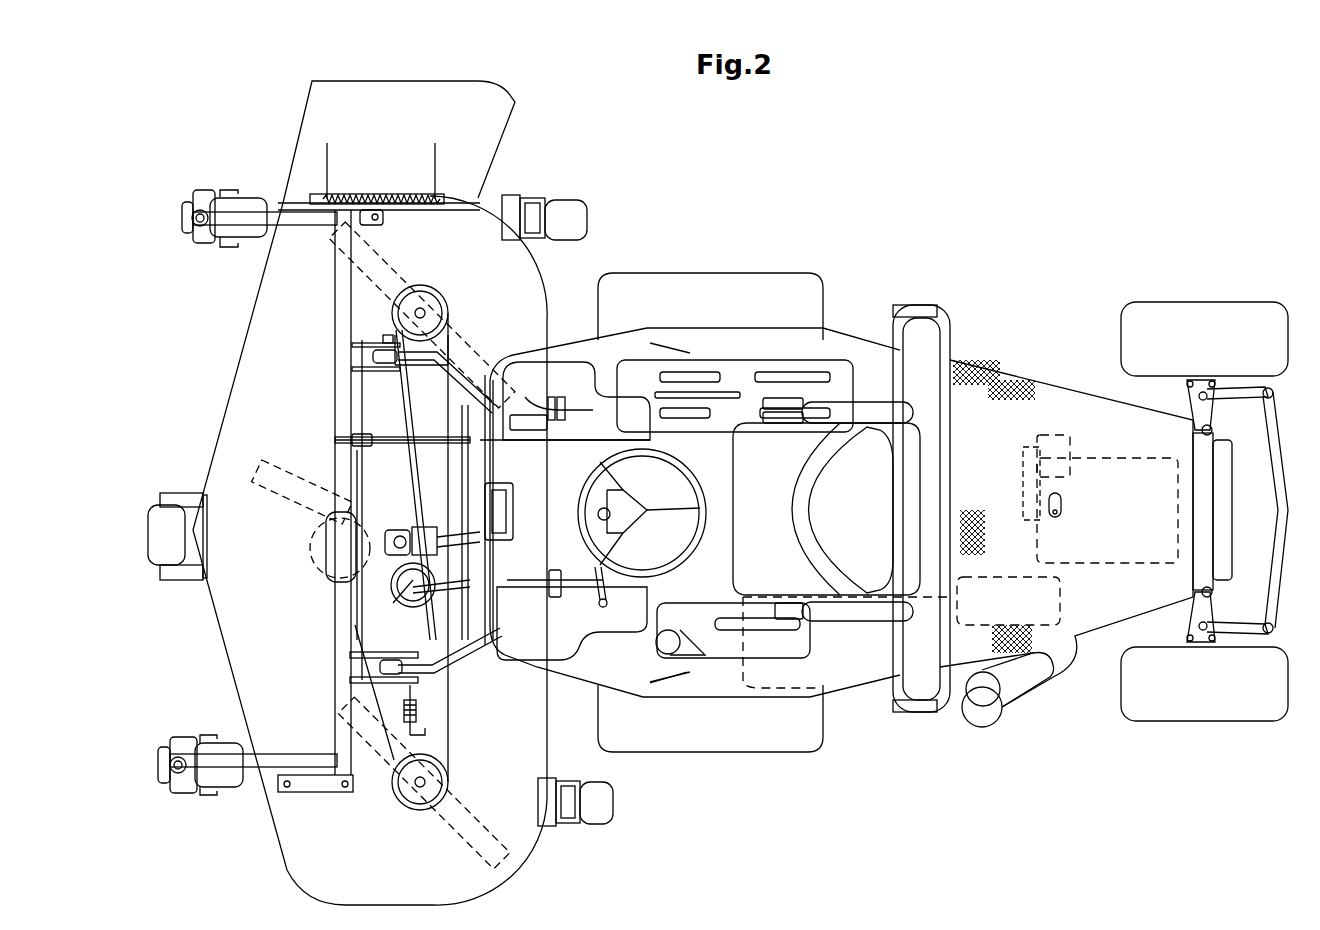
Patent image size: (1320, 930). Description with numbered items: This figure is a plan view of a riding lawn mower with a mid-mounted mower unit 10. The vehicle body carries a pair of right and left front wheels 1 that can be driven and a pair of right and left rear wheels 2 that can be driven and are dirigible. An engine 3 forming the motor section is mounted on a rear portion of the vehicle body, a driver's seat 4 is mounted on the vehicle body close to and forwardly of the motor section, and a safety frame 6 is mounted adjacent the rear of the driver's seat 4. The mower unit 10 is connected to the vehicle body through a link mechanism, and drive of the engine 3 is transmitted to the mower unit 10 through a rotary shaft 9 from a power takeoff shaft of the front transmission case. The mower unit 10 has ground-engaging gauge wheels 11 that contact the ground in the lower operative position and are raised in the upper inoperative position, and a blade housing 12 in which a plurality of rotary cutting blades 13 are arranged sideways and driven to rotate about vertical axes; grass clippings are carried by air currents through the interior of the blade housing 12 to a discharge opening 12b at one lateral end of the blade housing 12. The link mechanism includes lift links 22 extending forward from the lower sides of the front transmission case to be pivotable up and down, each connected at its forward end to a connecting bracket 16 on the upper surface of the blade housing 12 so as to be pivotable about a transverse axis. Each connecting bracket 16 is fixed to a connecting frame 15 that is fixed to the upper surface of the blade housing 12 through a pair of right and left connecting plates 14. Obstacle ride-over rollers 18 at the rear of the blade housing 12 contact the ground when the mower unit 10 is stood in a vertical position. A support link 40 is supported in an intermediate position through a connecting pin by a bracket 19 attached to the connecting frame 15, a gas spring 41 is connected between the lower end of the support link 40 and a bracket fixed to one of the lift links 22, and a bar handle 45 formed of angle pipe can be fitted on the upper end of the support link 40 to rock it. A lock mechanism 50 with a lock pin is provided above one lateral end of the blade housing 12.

The front wheels 1 is at (722, 288).
The rear wheels 2 is at (1210, 315).
The engine 3 is at (1113, 470).
The driver's seat 4 is at (762, 472).
The safety frame 6 is at (952, 330).
The rotary shaft 9 is at (420, 535).
The mower unit 10 is at (213, 463).
The gauge wheels 11 is at (250, 200).
The blade housing 12 is at (263, 380).
The discharge opening 12b is at (482, 128).
The rotary cutting blades 13 is at (403, 283).
The connecting plates 14 is at (375, 222).
The connecting frame 15 is at (338, 366).
The connecting bracket 16 is at (348, 338).
The obstacle ride-over rollers 18 is at (580, 216).
The bracket 19 is at (355, 435).
The lift links 22 is at (472, 390).
The support link 40 is at (343, 438).
The gas spring 41 is at (432, 435).
The bar handle 45 is at (348, 623).
The lock mechanism 50 is at (437, 726).